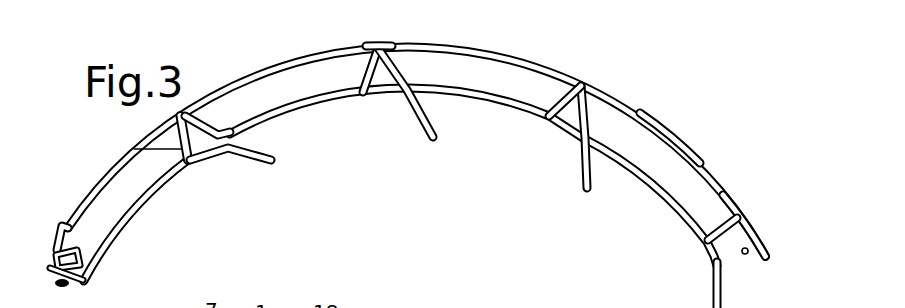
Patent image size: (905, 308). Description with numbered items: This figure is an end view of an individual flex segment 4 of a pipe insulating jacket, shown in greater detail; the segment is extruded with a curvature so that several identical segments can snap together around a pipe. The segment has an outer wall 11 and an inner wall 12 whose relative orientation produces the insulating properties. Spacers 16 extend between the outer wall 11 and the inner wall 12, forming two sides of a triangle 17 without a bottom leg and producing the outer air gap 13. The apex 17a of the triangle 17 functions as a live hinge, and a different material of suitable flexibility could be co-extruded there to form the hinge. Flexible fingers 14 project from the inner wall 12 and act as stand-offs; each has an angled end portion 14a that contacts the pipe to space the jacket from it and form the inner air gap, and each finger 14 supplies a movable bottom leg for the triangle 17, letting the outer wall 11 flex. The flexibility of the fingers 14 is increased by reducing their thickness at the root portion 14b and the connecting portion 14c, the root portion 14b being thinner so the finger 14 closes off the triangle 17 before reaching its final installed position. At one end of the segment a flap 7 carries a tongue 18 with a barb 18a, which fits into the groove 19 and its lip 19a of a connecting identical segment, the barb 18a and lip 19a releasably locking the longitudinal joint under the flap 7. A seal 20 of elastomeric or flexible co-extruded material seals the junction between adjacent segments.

The flex segment 4 is at (392, 164).
The flap 7 is at (747, 226).
The outer wall 11 is at (656, 123).
The inner wall 12 is at (657, 197).
The outer air gap 13 is at (664, 153).
The flexible finger 14 is at (213, 163).
The angled end portion 14a is at (252, 163).
The root portion 14b is at (363, 98).
The connecting portion 14c is at (396, 106).
The spacer 16 is at (134, 149).
The triangle 17 is at (204, 136).
The apex 17a is at (377, 44).
The tongue 18 is at (712, 248).
The barb 18a is at (745, 262).
The groove 19 is at (56, 259).
The lip 19a is at (62, 256).
The seal 20 is at (72, 287).